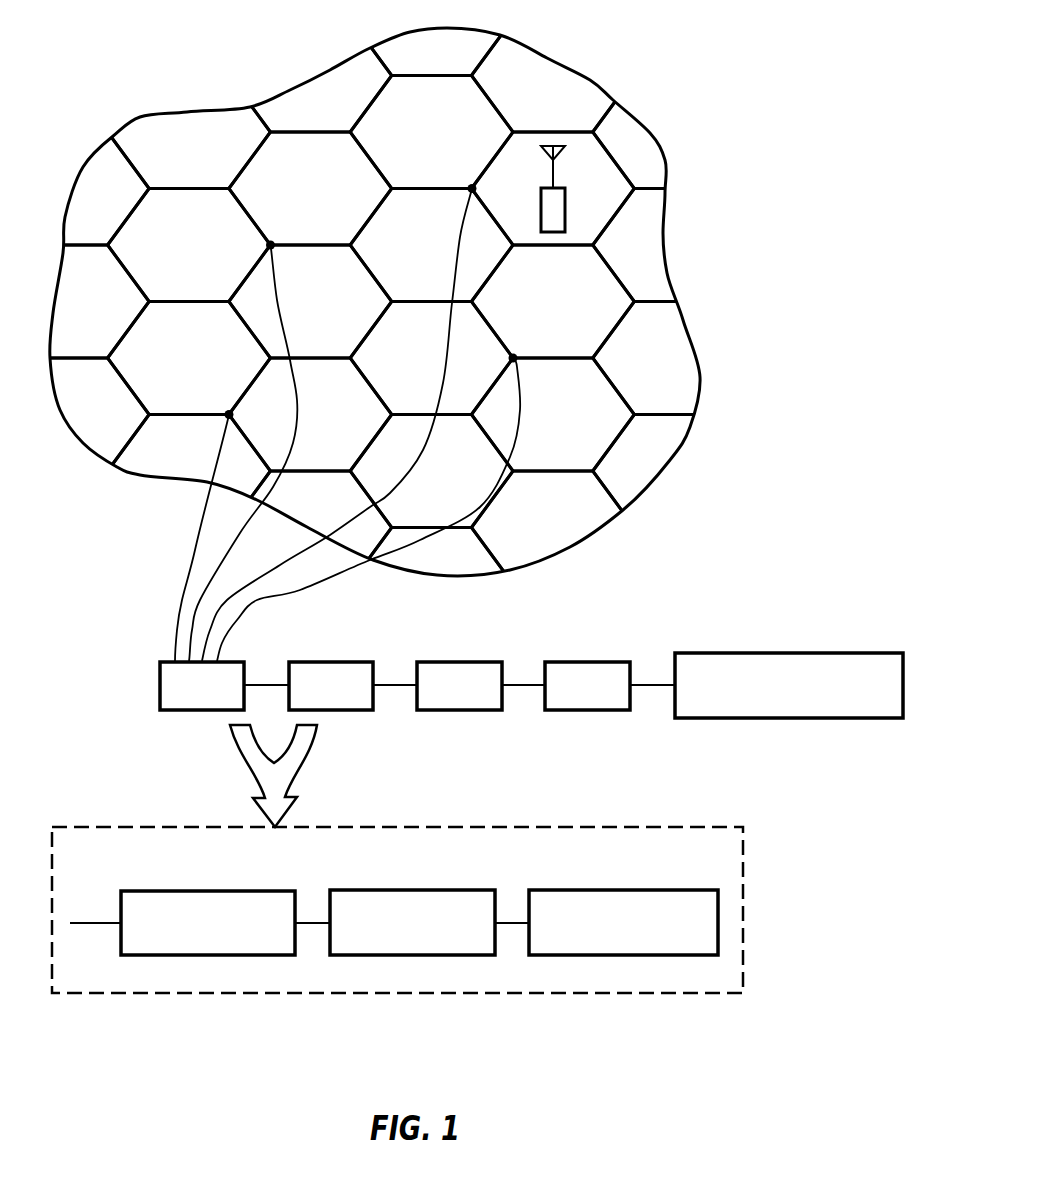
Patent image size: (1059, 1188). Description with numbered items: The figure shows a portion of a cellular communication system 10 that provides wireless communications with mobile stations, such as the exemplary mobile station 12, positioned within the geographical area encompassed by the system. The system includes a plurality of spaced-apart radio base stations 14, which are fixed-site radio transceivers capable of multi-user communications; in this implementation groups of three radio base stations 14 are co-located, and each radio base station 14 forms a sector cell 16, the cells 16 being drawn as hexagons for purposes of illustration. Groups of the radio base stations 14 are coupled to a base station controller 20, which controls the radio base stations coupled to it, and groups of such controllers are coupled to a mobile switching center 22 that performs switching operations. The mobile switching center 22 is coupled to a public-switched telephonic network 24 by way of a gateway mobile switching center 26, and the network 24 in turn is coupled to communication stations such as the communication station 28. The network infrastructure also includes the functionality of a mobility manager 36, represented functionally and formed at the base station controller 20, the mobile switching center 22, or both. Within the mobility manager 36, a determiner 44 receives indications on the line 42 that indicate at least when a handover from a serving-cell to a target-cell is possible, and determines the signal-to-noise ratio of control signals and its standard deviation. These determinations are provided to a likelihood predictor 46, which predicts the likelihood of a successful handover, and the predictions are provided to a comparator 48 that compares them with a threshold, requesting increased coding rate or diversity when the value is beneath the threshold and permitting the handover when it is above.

The cellular communication system 10 is at (706, 41).
The mobile station 12 is at (565, 207).
The radio base station 14 is at (364, 408).
The sector cell 16 is at (378, 320).
The base station controller (BSC) 20 is at (228, 660).
The mobile switching center (MSC) 22 is at (353, 660).
The public-switched telephonic network (PSTN) 24 is at (607, 660).
The gateway mobile switching center (GMSC) 26 is at (481, 660).
The communication station 28 is at (884, 652).
The mobility manager 36 is at (641, 826).
The line 42 is at (93, 921).
The determiner 44 is at (258, 890).
The likelihood predictor 46 is at (456, 889).
The comparator 48 is at (679, 889).